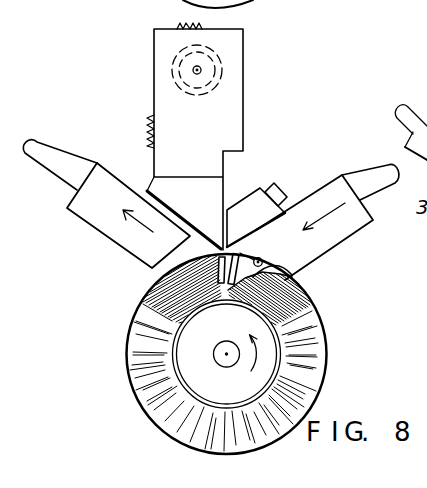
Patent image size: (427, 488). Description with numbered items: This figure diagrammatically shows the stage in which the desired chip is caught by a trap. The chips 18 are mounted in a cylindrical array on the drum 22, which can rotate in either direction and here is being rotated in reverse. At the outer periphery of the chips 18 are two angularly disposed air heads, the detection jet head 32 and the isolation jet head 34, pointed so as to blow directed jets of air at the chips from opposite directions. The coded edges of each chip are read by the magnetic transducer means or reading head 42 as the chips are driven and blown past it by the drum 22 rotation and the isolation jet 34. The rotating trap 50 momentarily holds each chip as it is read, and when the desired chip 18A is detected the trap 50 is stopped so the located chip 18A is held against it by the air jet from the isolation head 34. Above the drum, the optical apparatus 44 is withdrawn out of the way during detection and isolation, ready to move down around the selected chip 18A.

The chips 18 is at (173, 426).
The located chip 18A is at (298, 274).
The drum 22 is at (266, 366).
The detection jet head 32 is at (130, 222).
The isolation jet head 34 is at (322, 238).
The magnetic transducer means 42 is at (259, 258).
The optical apparatus 44 is at (256, 103).
The rotating trap 50 is at (218, 262).